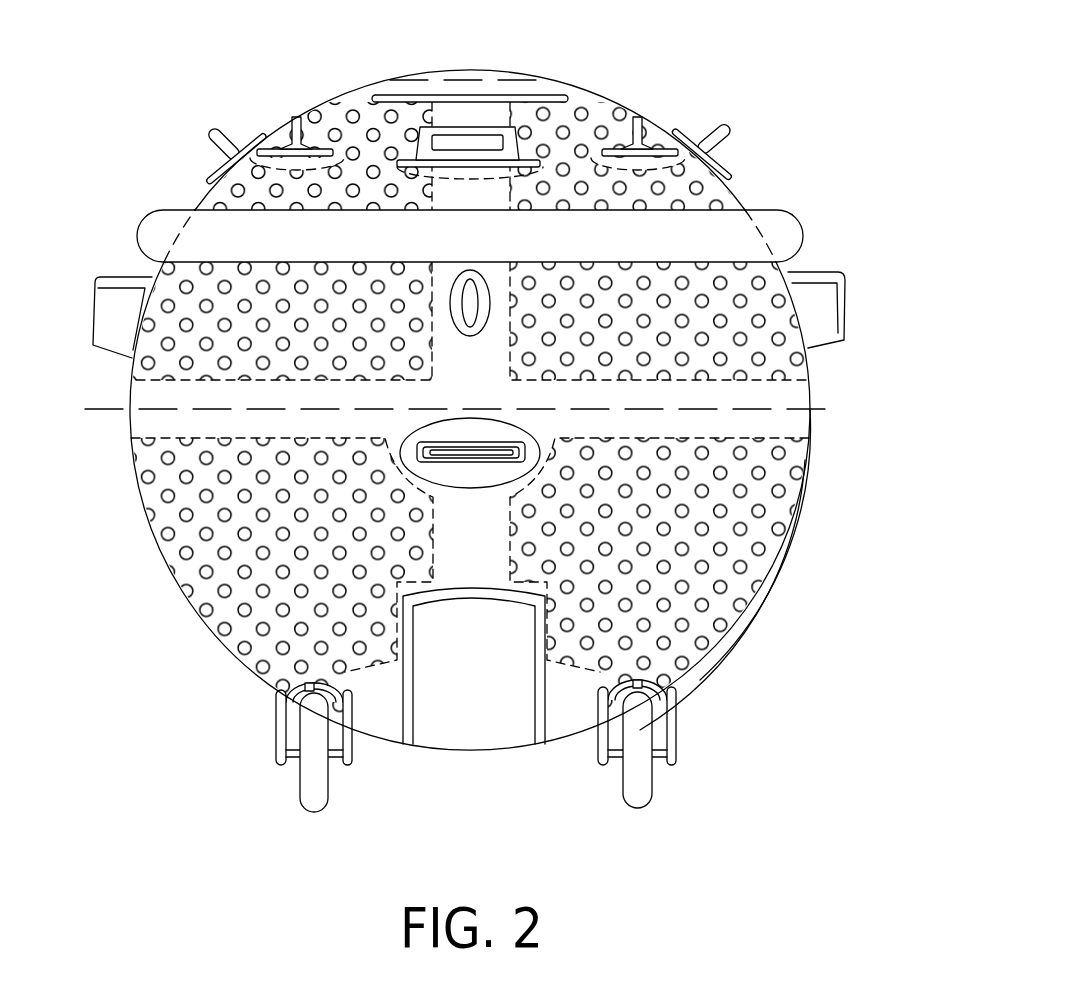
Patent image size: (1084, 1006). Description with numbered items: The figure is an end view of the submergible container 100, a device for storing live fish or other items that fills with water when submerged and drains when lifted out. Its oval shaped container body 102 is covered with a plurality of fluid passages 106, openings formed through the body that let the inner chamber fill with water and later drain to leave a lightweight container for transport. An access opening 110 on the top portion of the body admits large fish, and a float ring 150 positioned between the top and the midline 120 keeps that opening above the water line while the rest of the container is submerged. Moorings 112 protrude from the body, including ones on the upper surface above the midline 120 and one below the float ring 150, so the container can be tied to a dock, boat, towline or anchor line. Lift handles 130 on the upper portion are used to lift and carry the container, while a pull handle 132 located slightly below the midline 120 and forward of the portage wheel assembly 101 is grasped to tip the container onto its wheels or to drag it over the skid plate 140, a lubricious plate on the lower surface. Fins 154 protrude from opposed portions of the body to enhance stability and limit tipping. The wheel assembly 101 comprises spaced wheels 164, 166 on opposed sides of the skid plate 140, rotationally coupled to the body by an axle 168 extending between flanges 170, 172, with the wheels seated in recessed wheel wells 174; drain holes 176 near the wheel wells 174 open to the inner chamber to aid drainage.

The submergible container 100 is at (800, 140).
The portage wheel assembly 101 is at (783, 645).
The container body 102 is at (780, 550).
The fluid passages 106 is at (773, 467).
The access opening 110 is at (521, 72).
The moorings 112 is at (205, 133).
The midline 120 is at (827, 392).
The lift handles 130 is at (293, 117).
The pull handle 132 is at (468, 442).
The skid plate 140 is at (491, 671).
The float ring 150 is at (372, 251).
The fins 154 is at (117, 270).
The wheel 164 is at (320, 812).
The wheel 166 is at (623, 797).
The axle 168 is at (293, 765).
The flange 170 is at (276, 753).
The flange 172 is at (353, 758).
The wheel wells 174 is at (333, 690).
The drain holes 176 is at (307, 684).